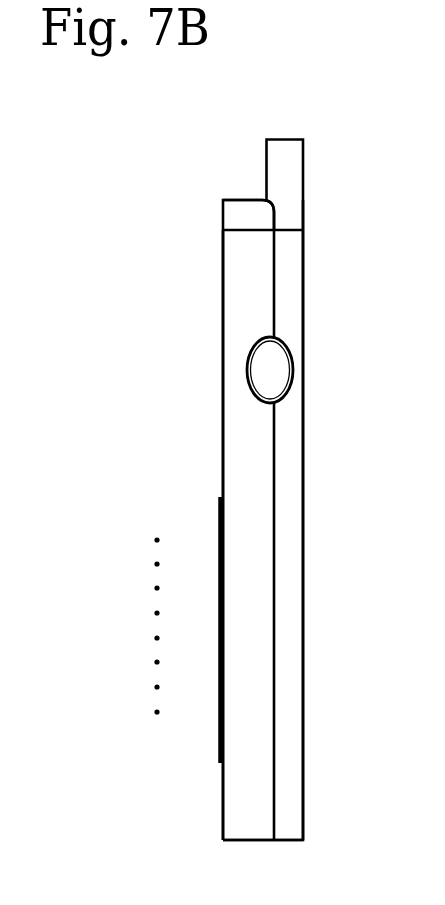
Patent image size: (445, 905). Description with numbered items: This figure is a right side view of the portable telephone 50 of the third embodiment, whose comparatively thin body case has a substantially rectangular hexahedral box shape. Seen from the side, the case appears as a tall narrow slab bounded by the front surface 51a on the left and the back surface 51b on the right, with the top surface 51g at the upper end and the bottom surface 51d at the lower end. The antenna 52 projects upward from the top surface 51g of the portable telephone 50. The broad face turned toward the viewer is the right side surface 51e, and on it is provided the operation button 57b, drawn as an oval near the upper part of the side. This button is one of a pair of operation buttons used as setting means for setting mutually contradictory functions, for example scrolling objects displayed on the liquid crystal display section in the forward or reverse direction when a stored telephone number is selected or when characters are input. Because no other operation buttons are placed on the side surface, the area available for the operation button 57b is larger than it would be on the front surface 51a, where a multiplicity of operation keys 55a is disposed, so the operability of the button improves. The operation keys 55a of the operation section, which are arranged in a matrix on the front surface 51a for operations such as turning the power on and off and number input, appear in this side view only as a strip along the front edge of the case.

The portable telephone 50 is at (248, 171).
The antenna 52 is at (304, 170).
The top surface 51g is at (251, 200).
The front surface 51a is at (222, 312).
The back surface 51b is at (304, 315).
The operation button 57b is at (293, 368).
The right side surface 51e is at (257, 578).
The operation keys 55a is at (219, 530).
The bottom surface 51d is at (253, 841).